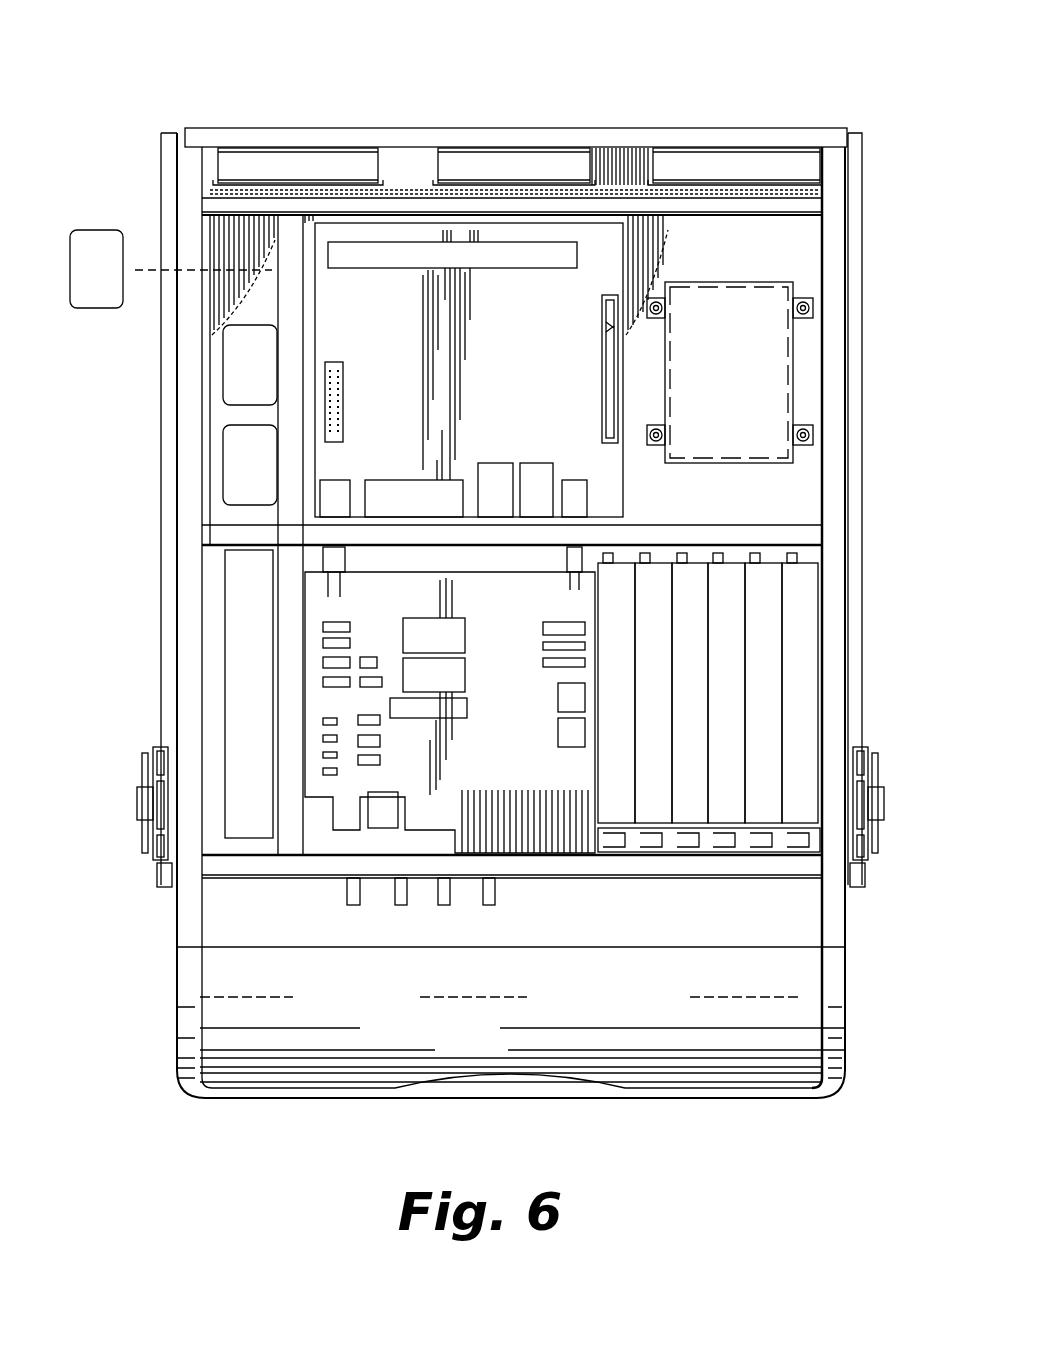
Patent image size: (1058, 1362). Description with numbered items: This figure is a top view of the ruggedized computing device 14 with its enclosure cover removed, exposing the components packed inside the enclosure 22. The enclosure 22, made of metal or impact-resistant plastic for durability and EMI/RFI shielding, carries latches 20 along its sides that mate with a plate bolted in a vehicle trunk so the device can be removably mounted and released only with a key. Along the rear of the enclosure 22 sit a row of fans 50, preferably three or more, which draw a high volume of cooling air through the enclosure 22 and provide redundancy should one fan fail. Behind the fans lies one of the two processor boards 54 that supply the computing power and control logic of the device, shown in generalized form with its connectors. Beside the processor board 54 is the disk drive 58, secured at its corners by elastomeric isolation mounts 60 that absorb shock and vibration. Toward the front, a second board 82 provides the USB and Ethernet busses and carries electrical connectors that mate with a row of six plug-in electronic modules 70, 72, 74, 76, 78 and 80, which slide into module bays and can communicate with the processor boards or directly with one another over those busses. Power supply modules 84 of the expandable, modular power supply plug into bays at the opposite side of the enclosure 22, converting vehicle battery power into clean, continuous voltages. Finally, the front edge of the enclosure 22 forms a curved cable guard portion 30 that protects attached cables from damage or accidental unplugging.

The ruggedized computing device 14 is at (578, 88).
The latches 20 is at (137, 792).
The enclosure 22 is at (843, 925).
The curved cable guard portion 30 is at (215, 977).
The fans 50 is at (497, 160).
The processor board 54 is at (597, 245).
The disk drive 58 is at (748, 465).
The elastomeric isolation mounts 60 is at (813, 425).
The electronic module 70 is at (623, 810).
The electronic module 72 is at (657, 813).
The electronic module 74 is at (690, 813).
The electronic module 76 is at (733, 803).
The electronic module 78 is at (767, 807).
The electronic module 80 is at (806, 803).
The board 82 is at (318, 608).
The power supply modules 84 is at (223, 352).